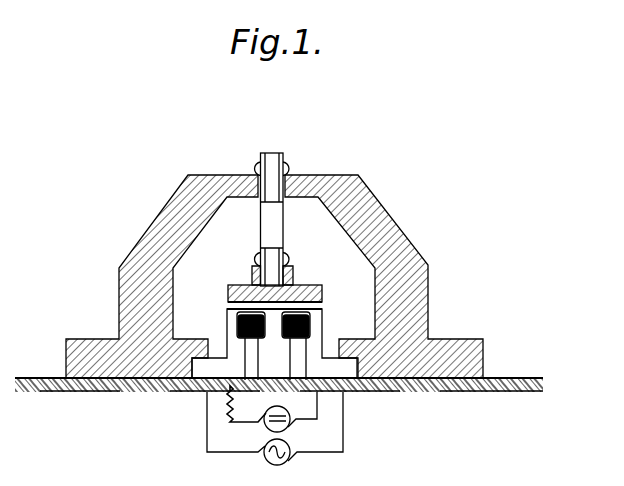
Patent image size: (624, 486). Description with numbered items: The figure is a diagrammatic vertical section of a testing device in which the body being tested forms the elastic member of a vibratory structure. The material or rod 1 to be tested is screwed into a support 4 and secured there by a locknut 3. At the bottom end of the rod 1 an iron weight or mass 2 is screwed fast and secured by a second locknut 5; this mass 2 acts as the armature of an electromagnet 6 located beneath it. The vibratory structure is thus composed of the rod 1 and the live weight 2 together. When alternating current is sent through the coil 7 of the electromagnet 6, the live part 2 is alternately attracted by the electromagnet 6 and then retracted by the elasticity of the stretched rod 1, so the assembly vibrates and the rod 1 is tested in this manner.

The rod 1 is at (279, 235).
The iron weight or mass 2 is at (327, 292).
The locknut 3 is at (291, 164).
The support 4 is at (384, 219).
The locknut 5 is at (294, 263).
The electromagnet 6 is at (318, 347).
The coil 7 is at (311, 330).